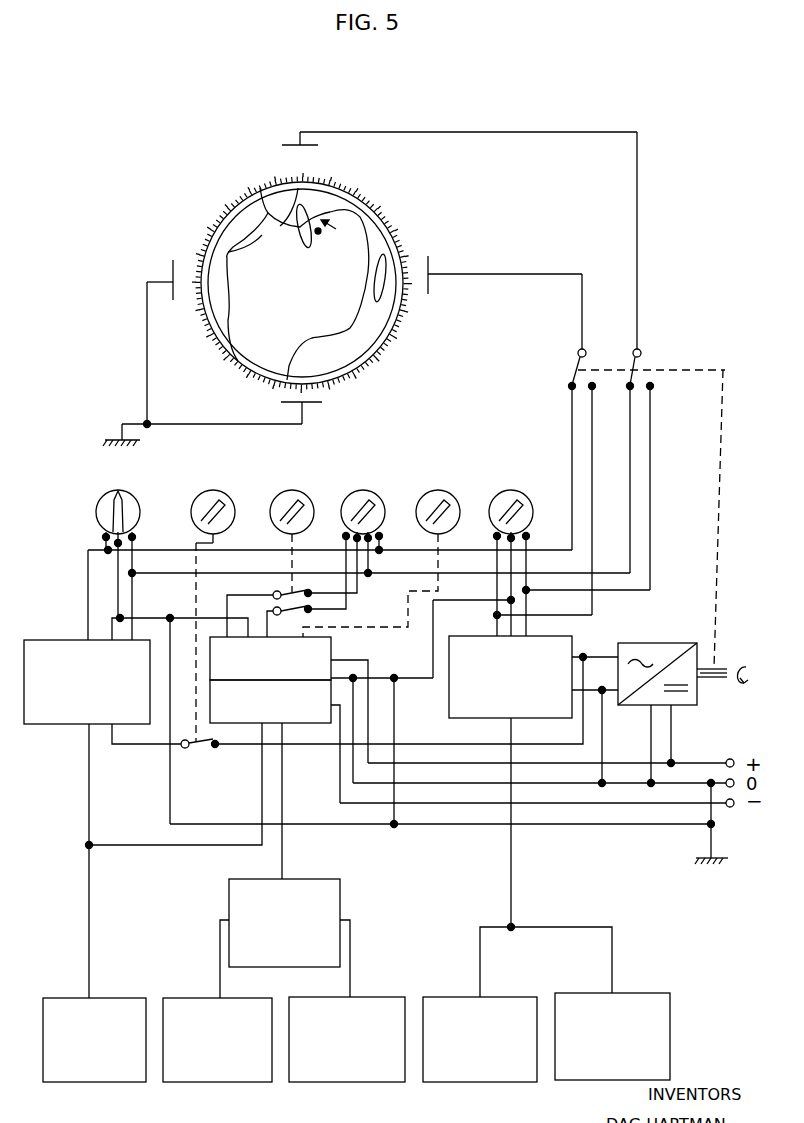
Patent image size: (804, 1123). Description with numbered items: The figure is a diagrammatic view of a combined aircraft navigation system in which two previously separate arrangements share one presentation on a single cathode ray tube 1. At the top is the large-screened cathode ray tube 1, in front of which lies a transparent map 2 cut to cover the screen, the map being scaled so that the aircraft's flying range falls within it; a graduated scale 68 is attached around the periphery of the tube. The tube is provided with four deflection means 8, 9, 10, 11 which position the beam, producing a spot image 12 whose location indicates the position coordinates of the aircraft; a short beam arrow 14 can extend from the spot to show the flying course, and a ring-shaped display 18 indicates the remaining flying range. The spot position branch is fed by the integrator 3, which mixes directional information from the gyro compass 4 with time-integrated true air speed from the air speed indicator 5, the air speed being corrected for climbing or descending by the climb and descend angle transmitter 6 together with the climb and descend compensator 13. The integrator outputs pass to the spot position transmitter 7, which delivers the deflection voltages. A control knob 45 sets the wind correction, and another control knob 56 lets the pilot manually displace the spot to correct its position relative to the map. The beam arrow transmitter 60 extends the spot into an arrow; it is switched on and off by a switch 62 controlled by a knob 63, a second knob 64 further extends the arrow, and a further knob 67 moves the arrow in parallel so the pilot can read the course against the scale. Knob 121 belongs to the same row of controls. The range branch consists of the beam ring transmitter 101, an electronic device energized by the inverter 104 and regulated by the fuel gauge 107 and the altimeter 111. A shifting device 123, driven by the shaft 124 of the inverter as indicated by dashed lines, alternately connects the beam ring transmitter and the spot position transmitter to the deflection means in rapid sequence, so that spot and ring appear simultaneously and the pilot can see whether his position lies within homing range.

The cathode ray tube 1 is at (213, 233).
The transparent map 2 is at (392, 228).
The integrator 3 is at (224, 723).
The gyro compass 4 is at (91, 1082).
The air speed indicator 5 is at (215, 1082).
The climb and descend angle transmitter 6 is at (346, 1082).
The beam spot position transmitter 7 is at (333, 645).
The deflection means 8 is at (292, 143).
The deflection means 9 is at (430, 272).
The deflection means 10 is at (308, 404).
The deflection means 11 is at (172, 275).
The spot image 12 is at (318, 234).
The climb and descend compensator 13 is at (277, 967).
The beam arrow 14 is at (339, 232).
The beam ring marker 18 is at (403, 244).
The control knob 45 is at (363, 490).
The control knob 56 is at (438, 490).
The beam arrow transmitter 60 is at (38, 724).
The switch 62 is at (201, 748).
The knob 63 is at (213, 490).
The second knob 64 is at (118, 490).
The knob 67 is at (292, 490).
The graduated scale 68 is at (362, 184).
The beam ring transmitter 101 is at (449, 700).
The inverter 104 is at (681, 706).
The fuel gauge 107 is at (478, 1082).
The altimeter 111 is at (612, 1080).
The meter 121 is at (511, 490).
The shifting device 123 is at (606, 366).
The shaft 124 is at (722, 668).